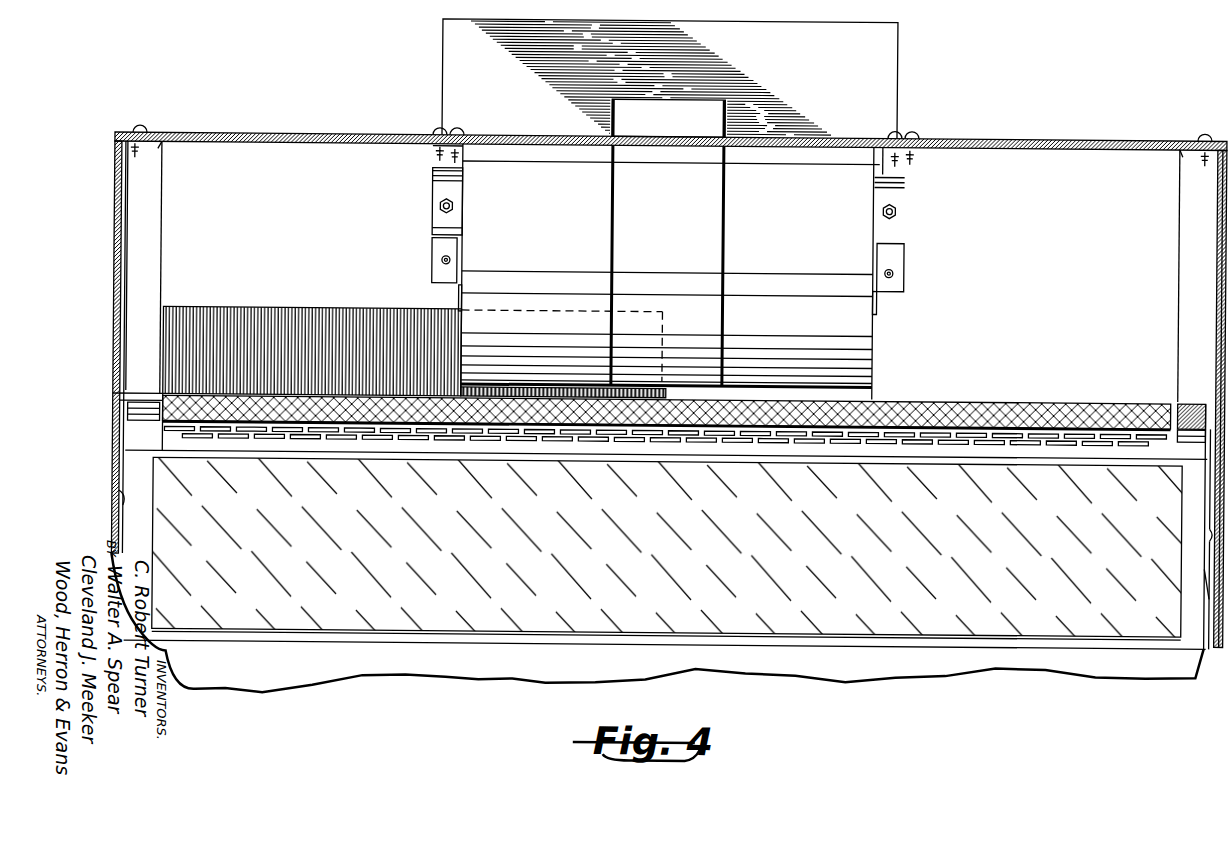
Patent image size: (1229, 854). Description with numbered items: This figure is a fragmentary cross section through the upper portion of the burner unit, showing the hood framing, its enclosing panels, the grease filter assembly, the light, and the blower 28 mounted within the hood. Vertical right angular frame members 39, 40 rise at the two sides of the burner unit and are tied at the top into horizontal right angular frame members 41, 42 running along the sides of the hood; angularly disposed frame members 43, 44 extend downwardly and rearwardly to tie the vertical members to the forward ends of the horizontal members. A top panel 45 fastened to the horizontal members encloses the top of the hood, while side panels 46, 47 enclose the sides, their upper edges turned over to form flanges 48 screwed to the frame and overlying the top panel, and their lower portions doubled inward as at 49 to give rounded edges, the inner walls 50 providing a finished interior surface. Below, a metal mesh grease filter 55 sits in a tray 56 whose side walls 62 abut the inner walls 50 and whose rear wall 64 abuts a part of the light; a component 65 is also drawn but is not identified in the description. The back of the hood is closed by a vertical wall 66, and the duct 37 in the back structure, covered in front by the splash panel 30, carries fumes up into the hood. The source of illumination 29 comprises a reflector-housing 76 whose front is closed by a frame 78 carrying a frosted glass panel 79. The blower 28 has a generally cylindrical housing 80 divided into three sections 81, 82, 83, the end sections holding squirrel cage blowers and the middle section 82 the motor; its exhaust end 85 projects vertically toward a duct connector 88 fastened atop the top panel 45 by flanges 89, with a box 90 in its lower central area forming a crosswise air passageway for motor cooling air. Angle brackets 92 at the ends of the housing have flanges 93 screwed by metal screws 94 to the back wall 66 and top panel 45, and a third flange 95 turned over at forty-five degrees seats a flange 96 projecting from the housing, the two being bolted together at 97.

The blower 28 is at (880, 333).
The source of illumination 29 is at (668, 549).
The splash panel 30 is at (657, 626).
The duct 37 is at (300, 312).
The vertical right angular frame member 39 is at (160, 232).
The vertical right angular frame member 40 is at (1182, 310).
The horizontal right angular frame member 41 is at (157, 146).
The horizontal right angular frame member 42 is at (1181, 148).
The angularly disposed right angular frame member 43 is at (115, 358).
The angularly disposed right angular frame member 44 is at (1206, 395).
The top panel 45 is at (356, 132).
The side panel 46 is at (113, 444).
The side panel 47 is at (1212, 468).
The flange 48 is at (144, 131).
The doubled-over lower portion 49 is at (1212, 585).
The inner wall 50 is at (124, 498).
The metal mesh grease filter 55 is at (932, 400).
The tray 56 is at (935, 445).
The side wall of tray 62 is at (142, 422).
The rear wall of tray 64 is at (515, 452).
The gasket strip 65 is at (702, 440).
The vertical wall 66 is at (693, 242).
The reflector-housing 76 is at (452, 673).
The frame 78 is at (640, 452).
The frosted glass panel 79 is at (588, 520).
The housing 80 is at (775, 189).
The section 81 is at (537, 218).
The middle section 82 is at (670, 230).
The section 83 is at (792, 232).
The exhaust end 85 is at (582, 158).
The duct connector 88 is at (896, 60).
The flange 89 is at (428, 130).
The box 90 is at (700, 93).
The angle bracket 92 is at (460, 295).
The flange 93 is at (440, 253).
The metal screw 94 is at (443, 258).
The third flange 95 is at (433, 172).
The flange 96 is at (462, 185).
The bolt 97 is at (441, 205).